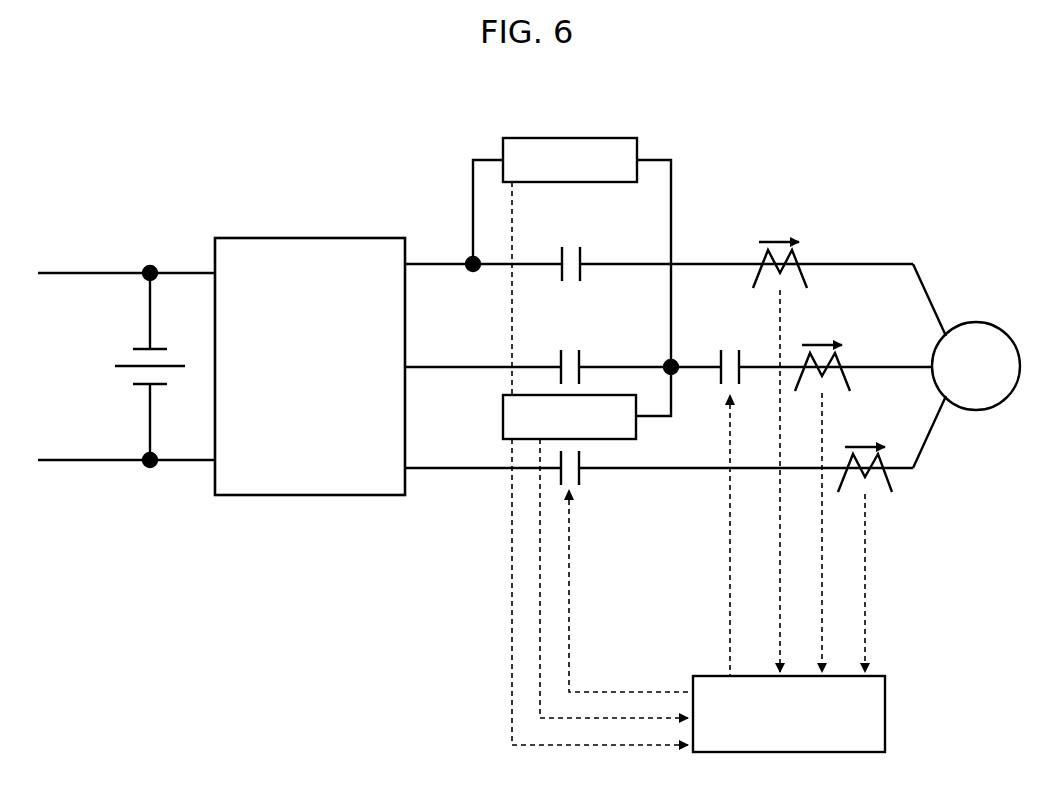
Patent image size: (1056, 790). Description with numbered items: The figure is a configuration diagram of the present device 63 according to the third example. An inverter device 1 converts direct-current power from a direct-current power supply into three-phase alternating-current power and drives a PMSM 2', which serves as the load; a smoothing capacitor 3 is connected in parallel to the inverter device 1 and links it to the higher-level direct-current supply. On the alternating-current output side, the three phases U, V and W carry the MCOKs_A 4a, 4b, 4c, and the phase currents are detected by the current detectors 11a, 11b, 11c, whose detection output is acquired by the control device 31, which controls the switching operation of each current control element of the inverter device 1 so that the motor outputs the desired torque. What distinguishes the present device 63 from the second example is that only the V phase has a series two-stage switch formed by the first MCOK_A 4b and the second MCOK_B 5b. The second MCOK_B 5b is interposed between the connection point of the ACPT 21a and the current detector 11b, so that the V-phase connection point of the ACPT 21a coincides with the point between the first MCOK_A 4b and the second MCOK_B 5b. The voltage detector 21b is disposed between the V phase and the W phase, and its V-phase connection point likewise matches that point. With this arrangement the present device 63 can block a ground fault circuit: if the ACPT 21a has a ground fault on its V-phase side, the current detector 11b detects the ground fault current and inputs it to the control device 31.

The present device 63 is at (328, 125).
The inverter device 1 is at (317, 378).
The smoothing capacitor 3 is at (101, 366).
The ACPT 21a is at (625, 173).
The voltage detector 21b is at (625, 429).
The MCOK_A 4a is at (581, 283).
The first MCOK_A 4b is at (557, 351).
The MCOK_A 4c is at (580, 487).
The second MCOK_B 5b is at (718, 386).
The ACPT 11a is at (806, 252).
The current detector 11b is at (845, 353).
The ACPT 11c is at (886, 453).
The PMSM 2' is at (976, 366).
The control device 31 is at (804, 725).